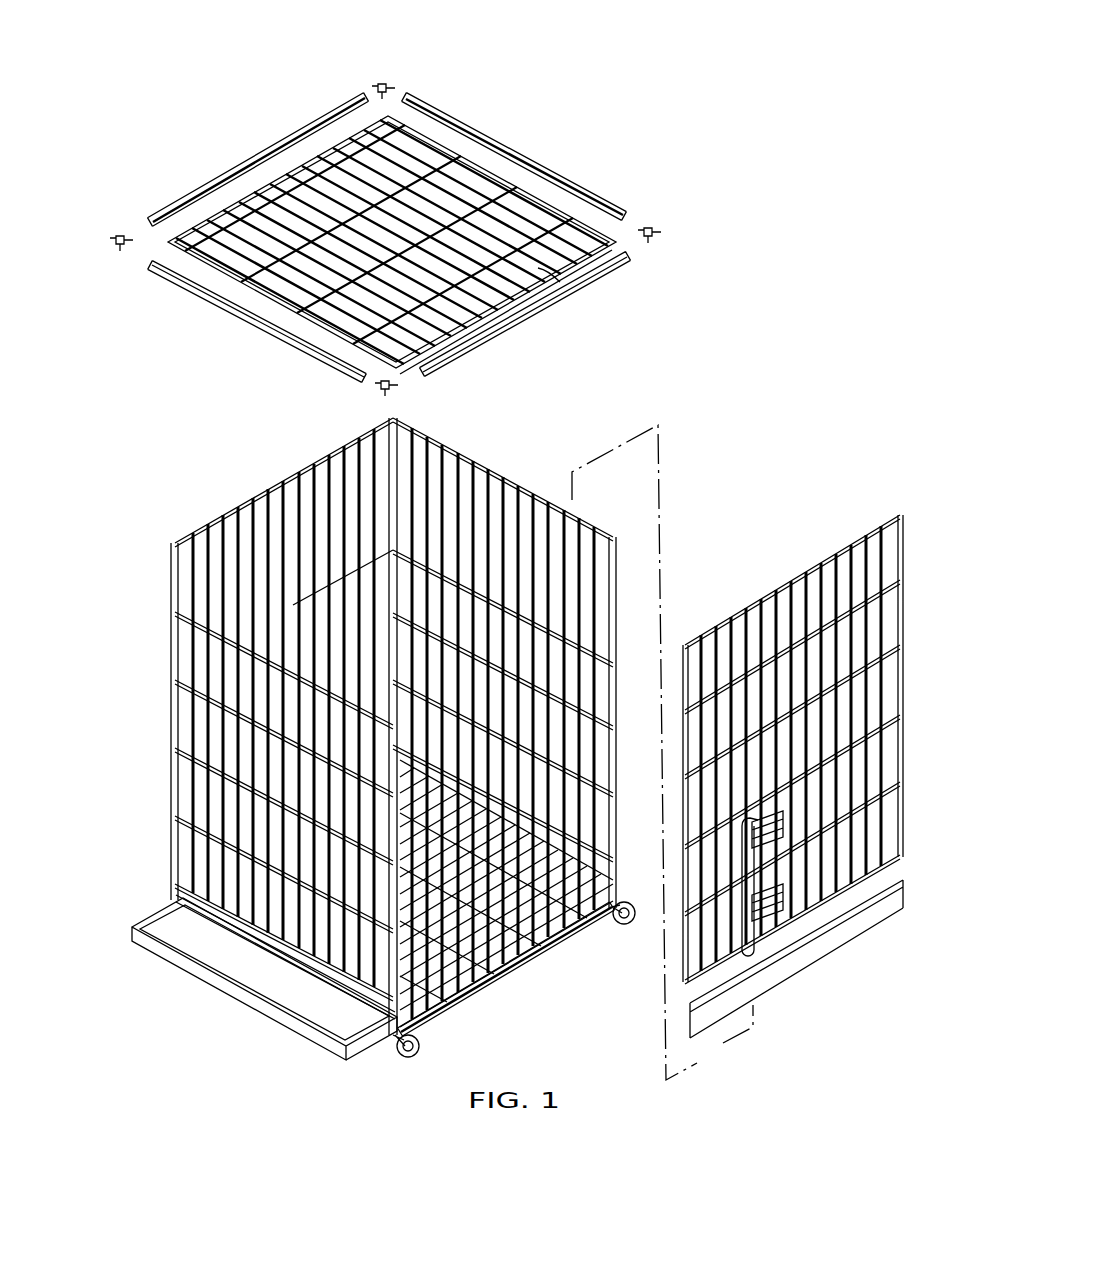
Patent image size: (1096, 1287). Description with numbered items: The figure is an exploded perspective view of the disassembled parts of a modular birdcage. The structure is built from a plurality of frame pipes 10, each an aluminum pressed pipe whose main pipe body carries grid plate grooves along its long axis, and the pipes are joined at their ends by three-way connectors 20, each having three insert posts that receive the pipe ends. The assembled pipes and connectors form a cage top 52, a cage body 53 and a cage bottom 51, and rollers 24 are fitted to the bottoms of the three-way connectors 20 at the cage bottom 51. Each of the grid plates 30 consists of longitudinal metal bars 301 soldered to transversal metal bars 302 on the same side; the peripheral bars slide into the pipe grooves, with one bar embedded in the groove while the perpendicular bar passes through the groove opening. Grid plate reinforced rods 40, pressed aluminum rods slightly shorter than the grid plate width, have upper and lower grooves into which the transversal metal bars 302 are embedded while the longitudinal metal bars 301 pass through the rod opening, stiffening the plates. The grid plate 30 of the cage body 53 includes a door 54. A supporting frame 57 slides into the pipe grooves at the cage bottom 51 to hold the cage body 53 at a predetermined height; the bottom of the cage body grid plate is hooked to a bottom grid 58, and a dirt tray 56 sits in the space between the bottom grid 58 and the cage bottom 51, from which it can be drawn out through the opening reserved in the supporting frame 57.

The frame pipe 10 is at (244, 161).
The three-way connector 20 is at (401, 79).
The roller 24 is at (630, 905).
The grid plate 30 is at (586, 213).
The grid plate reinforced rod 40 is at (312, 560).
The cage bottom 51 is at (650, 960).
The cage top 52 is at (726, 67).
The cage body 53 is at (133, 513).
The door 54 is at (692, 985).
The dirt tray 56 is at (302, 1030).
The supporting frame 57 is at (195, 905).
The bottom grid 58 is at (562, 889).
The longitudinal metal bar 301 is at (600, 262).
The transversal metal bar 302 is at (565, 284).